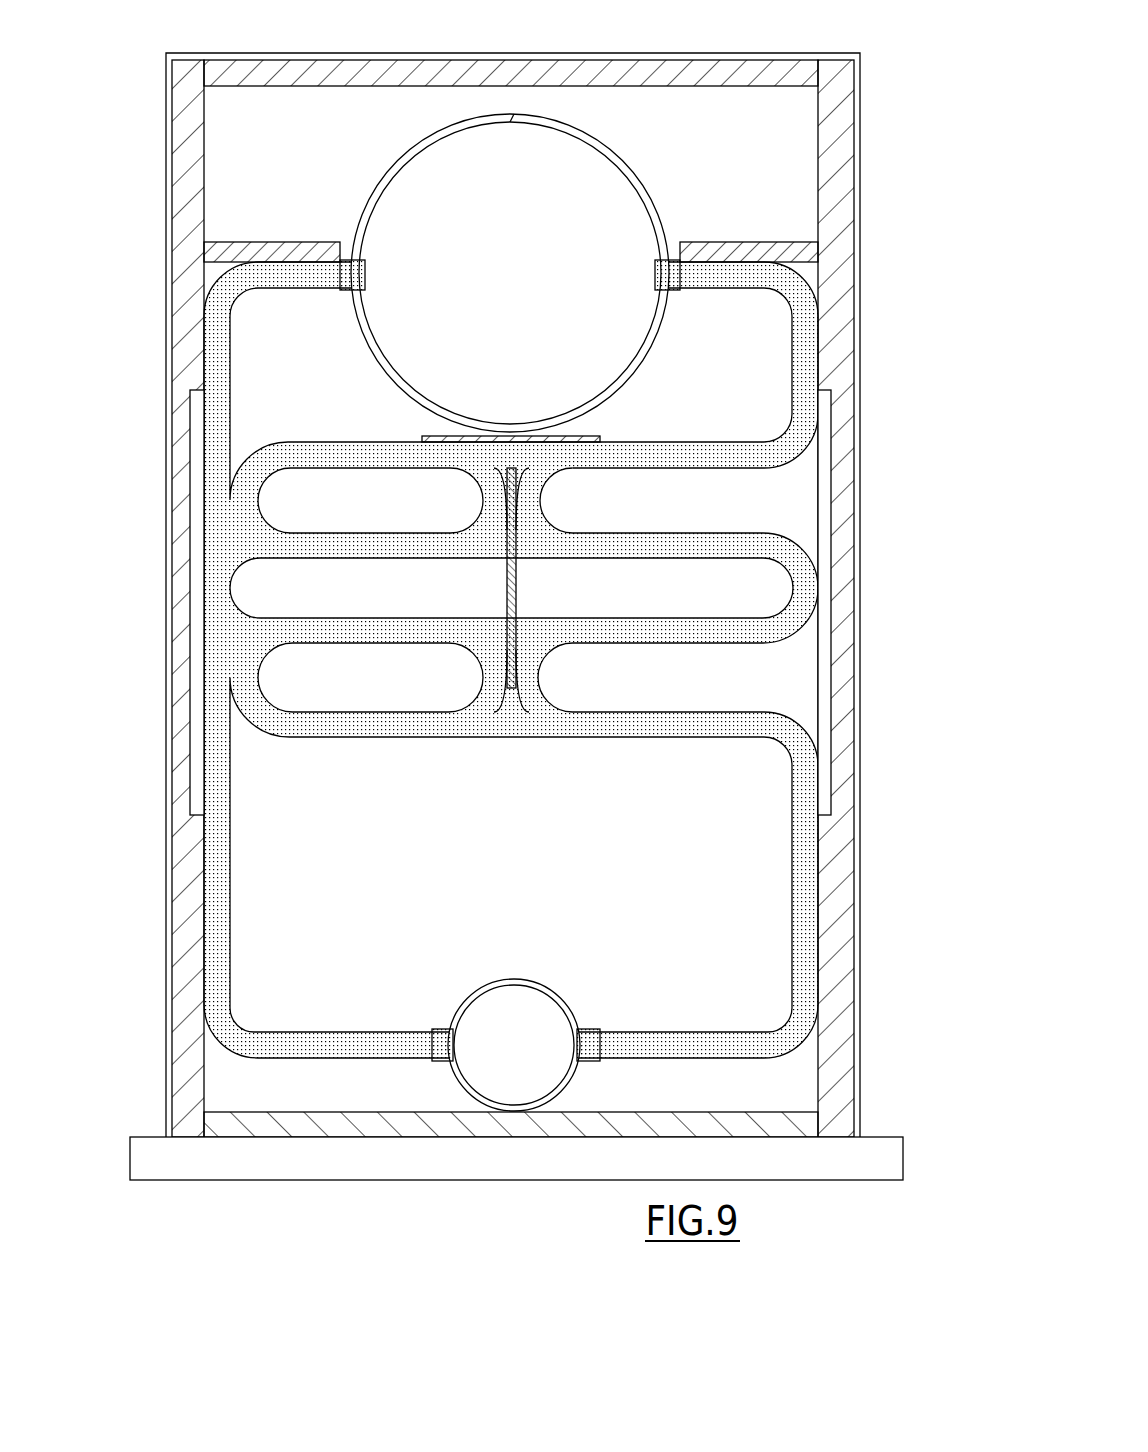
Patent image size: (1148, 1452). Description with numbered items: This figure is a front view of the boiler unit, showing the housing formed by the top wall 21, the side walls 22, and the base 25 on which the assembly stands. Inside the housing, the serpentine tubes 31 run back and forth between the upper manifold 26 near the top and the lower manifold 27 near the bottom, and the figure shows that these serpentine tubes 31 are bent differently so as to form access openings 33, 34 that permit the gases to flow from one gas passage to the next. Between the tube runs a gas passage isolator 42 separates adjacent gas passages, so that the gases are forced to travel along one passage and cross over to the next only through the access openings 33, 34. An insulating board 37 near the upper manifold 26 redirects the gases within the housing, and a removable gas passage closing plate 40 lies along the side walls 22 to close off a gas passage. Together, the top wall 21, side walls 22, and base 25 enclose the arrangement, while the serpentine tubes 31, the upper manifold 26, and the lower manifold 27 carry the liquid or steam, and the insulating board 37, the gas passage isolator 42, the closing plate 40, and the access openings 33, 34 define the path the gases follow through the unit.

The top wall 21 is at (580, 53).
The side walls 22 is at (166, 640).
The base 25 is at (877, 1137).
The upper manifold 26 is at (650, 192).
The lower manifold 27 is at (562, 996).
The serpentine tubes 31 is at (511, 660).
The access opening 33 is at (708, 441).
The access opening 34 is at (230, 935).
The insulating board 37 is at (262, 242).
The removable gas passage closing plate 40 is at (198, 573).
The gas passage isolator 42 is at (516, 596).